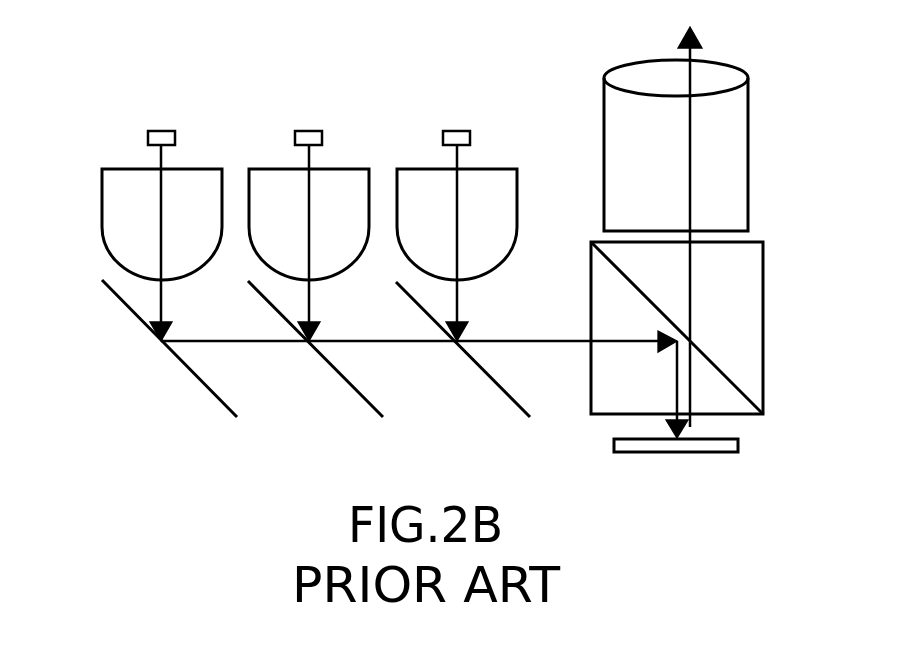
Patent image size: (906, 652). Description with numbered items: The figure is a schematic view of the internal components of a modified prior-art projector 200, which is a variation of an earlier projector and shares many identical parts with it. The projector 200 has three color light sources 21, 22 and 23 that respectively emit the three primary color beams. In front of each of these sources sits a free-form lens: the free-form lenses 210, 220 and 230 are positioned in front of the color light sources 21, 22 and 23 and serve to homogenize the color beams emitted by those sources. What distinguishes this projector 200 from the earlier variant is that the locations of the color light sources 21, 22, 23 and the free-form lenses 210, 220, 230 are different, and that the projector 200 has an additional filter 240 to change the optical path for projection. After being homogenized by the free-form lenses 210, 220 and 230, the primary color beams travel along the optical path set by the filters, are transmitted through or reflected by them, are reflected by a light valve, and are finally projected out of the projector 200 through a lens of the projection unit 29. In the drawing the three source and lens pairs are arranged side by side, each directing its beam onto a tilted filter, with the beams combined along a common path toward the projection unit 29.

The projector 200 is at (565, 39).
The color light source 21 is at (158, 137).
The color light source 22 is at (305, 133).
The color light source 23 is at (458, 137).
The free-form lens 210 is at (135, 177).
The free-form lens 220 is at (282, 177).
The free-form lens 230 is at (498, 222).
The filter 240 is at (497, 387).
The projection unit 29 is at (733, 148).